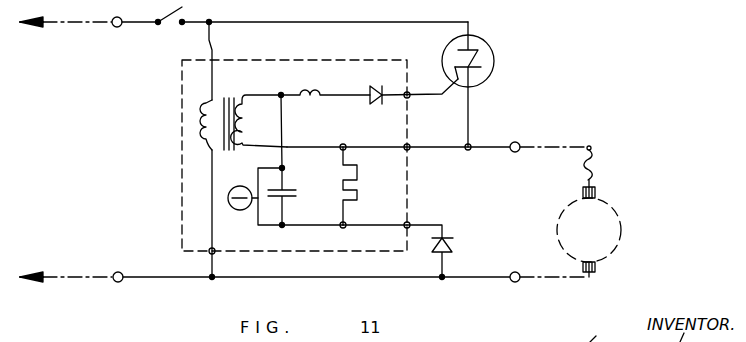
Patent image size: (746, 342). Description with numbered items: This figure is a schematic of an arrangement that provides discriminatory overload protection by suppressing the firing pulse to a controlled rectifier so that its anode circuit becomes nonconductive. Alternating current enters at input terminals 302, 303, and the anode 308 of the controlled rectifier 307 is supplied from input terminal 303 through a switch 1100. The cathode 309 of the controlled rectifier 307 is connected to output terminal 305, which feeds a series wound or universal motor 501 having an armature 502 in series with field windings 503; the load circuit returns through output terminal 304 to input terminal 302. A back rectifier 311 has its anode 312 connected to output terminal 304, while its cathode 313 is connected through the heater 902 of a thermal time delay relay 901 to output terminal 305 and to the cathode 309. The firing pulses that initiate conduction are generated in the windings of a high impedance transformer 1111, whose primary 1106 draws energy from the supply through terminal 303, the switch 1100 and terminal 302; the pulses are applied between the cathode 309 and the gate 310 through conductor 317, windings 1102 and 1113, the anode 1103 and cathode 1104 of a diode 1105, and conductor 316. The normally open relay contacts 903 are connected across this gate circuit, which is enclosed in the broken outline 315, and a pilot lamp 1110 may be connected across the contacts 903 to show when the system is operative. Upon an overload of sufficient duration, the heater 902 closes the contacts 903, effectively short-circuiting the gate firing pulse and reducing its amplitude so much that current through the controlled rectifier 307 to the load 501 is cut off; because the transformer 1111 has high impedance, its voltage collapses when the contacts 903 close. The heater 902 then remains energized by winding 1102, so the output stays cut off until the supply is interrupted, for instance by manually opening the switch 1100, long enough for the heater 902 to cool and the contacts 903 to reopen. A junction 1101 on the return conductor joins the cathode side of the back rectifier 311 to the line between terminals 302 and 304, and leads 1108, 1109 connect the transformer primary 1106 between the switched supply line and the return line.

The input terminal 302 is at (115, 273).
The input terminal 303 is at (115, 27).
The output terminal 304 is at (511, 272).
The output terminal 305 is at (513, 152).
The controlled rectifier 307 is at (493, 84).
The anode 308 is at (478, 50).
The cathode 309 is at (480, 71).
The gate 310 is at (462, 84).
The back rectifier 311 is at (448, 238).
The anode 312 is at (437, 255).
The cathode 313 is at (447, 232).
The control circuit 315 is at (265, 83).
The conductor 316 is at (423, 93).
The conductor 317 is at (430, 150).
The series wound or universal motor 501 is at (622, 211).
The armature 502 is at (618, 238).
The field windings 503 is at (597, 165).
The thermal time delay relay 901 is at (314, 186).
The heater 902 is at (357, 190).
The relay contacts 903 is at (296, 192).
The switch 1100 is at (170, 26).
The junction 1101 is at (445, 282).
The winding 1102 is at (252, 137).
The anode 1103 is at (368, 88).
The cathode 1104 is at (372, 83).
The diode 1105 is at (360, 81).
The transformer primary 1106 is at (204, 136).
The supply lead 1108 is at (212, 33).
The return lead 1109 is at (210, 268).
The pilot lamp 1110 is at (234, 210).
The transformer 1111 is at (207, 135).
The winding 1113 is at (306, 100).